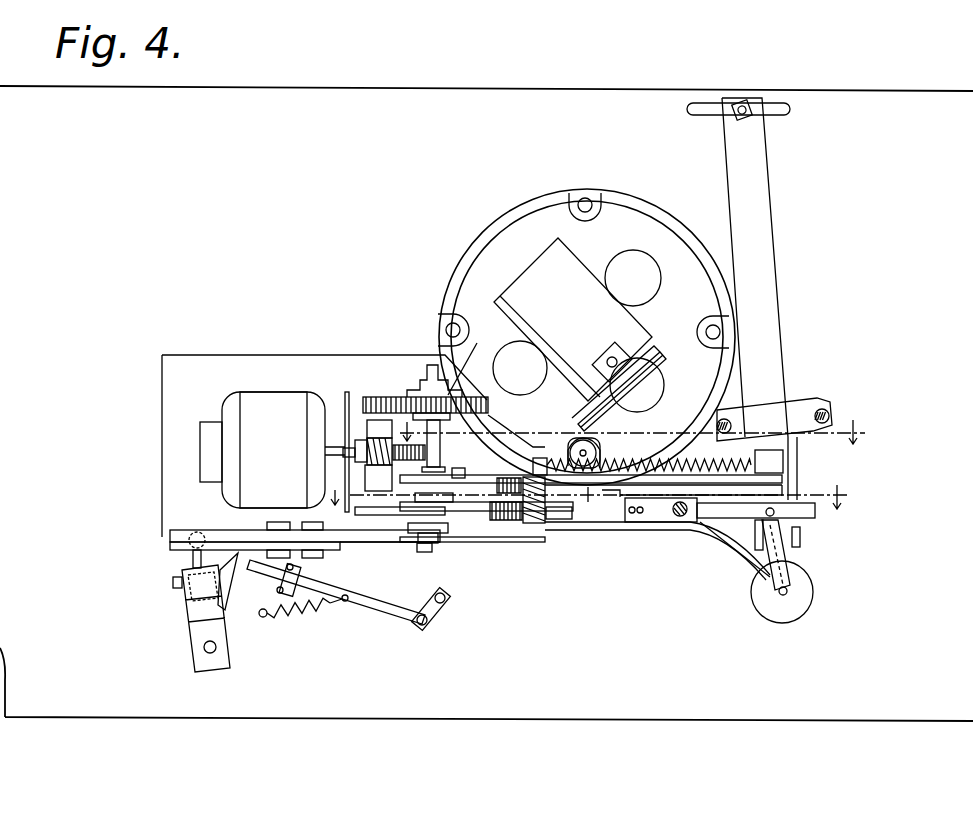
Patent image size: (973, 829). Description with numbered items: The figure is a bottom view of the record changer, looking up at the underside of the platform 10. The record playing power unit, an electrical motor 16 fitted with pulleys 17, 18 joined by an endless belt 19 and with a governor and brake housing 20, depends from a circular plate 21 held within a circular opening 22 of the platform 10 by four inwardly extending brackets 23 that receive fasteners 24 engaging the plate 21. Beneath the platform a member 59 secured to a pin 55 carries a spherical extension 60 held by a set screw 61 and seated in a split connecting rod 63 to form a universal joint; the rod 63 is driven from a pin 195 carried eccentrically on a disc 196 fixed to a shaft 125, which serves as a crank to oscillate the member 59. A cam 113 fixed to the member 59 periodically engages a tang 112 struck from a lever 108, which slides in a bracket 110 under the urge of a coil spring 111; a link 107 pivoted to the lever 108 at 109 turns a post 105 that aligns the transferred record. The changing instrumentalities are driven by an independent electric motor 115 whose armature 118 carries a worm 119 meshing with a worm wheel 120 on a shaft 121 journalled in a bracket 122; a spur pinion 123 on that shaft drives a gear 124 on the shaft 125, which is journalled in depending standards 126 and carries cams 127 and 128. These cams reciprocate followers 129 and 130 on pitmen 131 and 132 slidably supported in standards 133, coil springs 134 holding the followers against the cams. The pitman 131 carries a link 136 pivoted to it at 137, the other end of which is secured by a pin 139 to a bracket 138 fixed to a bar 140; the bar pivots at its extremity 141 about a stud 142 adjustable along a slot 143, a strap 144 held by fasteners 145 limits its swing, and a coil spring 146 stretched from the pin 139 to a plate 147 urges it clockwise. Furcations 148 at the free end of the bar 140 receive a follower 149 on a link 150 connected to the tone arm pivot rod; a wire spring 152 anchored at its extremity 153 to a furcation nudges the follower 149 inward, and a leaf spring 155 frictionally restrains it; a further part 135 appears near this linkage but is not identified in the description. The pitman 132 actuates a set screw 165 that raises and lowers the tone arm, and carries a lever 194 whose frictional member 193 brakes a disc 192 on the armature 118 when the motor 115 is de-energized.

The platform 10 is at (848, 715).
The electrical motor 16 is at (555, 283).
The pulley 17 is at (636, 354).
The pulley 18 is at (586, 395).
The endless belt 19 is at (660, 380).
The housing 20 is at (613, 355).
The circular plate 21 is at (530, 216).
The circular opening 22 is at (650, 200).
The brackets 23 is at (722, 320).
The fasteners 24 is at (715, 330).
The pin 55 is at (216, 647).
The member 59 is at (200, 630).
The spherical extension 60 is at (192, 555).
The set screw 61 is at (174, 585).
The split connecting rod 63 is at (400, 545).
The post 105 is at (450, 600).
The link 107 is at (447, 603).
The lever 108 is at (395, 615).
The pivot connection 109 is at (425, 626).
The bracket 110 is at (280, 535).
The coil spring 111 is at (300, 615).
The tang 112 is at (300, 578).
The cam 113 is at (232, 575).
The electric motor 115 is at (300, 355).
The armature 118 is at (338, 447).
The worm 119 is at (347, 395).
The worm wheel 120 is at (462, 448).
The shaft 121 is at (398, 385).
The bracket 122 is at (368, 475).
The spur pinion 123 is at (440, 385).
The gear 124 is at (520, 368).
The shaft 125 is at (468, 432).
The depending standards 126 is at (500, 568).
The cam 127 is at (478, 465).
The cam 128 is at (546, 500).
The cam follower 129 is at (535, 465).
The cam follower 130 is at (476, 518).
The pitman 131 is at (588, 482).
The pitman 132 is at (505, 522).
The standards 133 is at (560, 521).
The coil springs 134 is at (537, 517).
The arm 135 is at (735, 580).
The link 136 is at (700, 530).
The pivot 137 is at (650, 530).
The bracket 138 is at (784, 458).
The pin 139 is at (790, 492).
The bar 140 is at (785, 400).
The pivoted extremity 141 is at (765, 137).
The stud 142 is at (746, 107).
The slot 143 is at (792, 105).
The strap 144 is at (810, 405).
The fasteners 145 is at (830, 412).
The coil spring 146 is at (745, 465).
The plate 147 is at (530, 445).
The furcations 148 is at (800, 530).
The follower 149 is at (792, 560).
The link 150 is at (812, 590).
The wire spring 152 is at (790, 530).
The anchored extremity 153 is at (802, 540).
The leaf spring 155 is at (735, 549).
The set screw 165 is at (786, 595).
The disc 192 is at (352, 380).
The frictional member 193 is at (348, 515).
The lever 194 is at (415, 533).
The pin 195 is at (432, 545).
The disc 196 is at (424, 553).